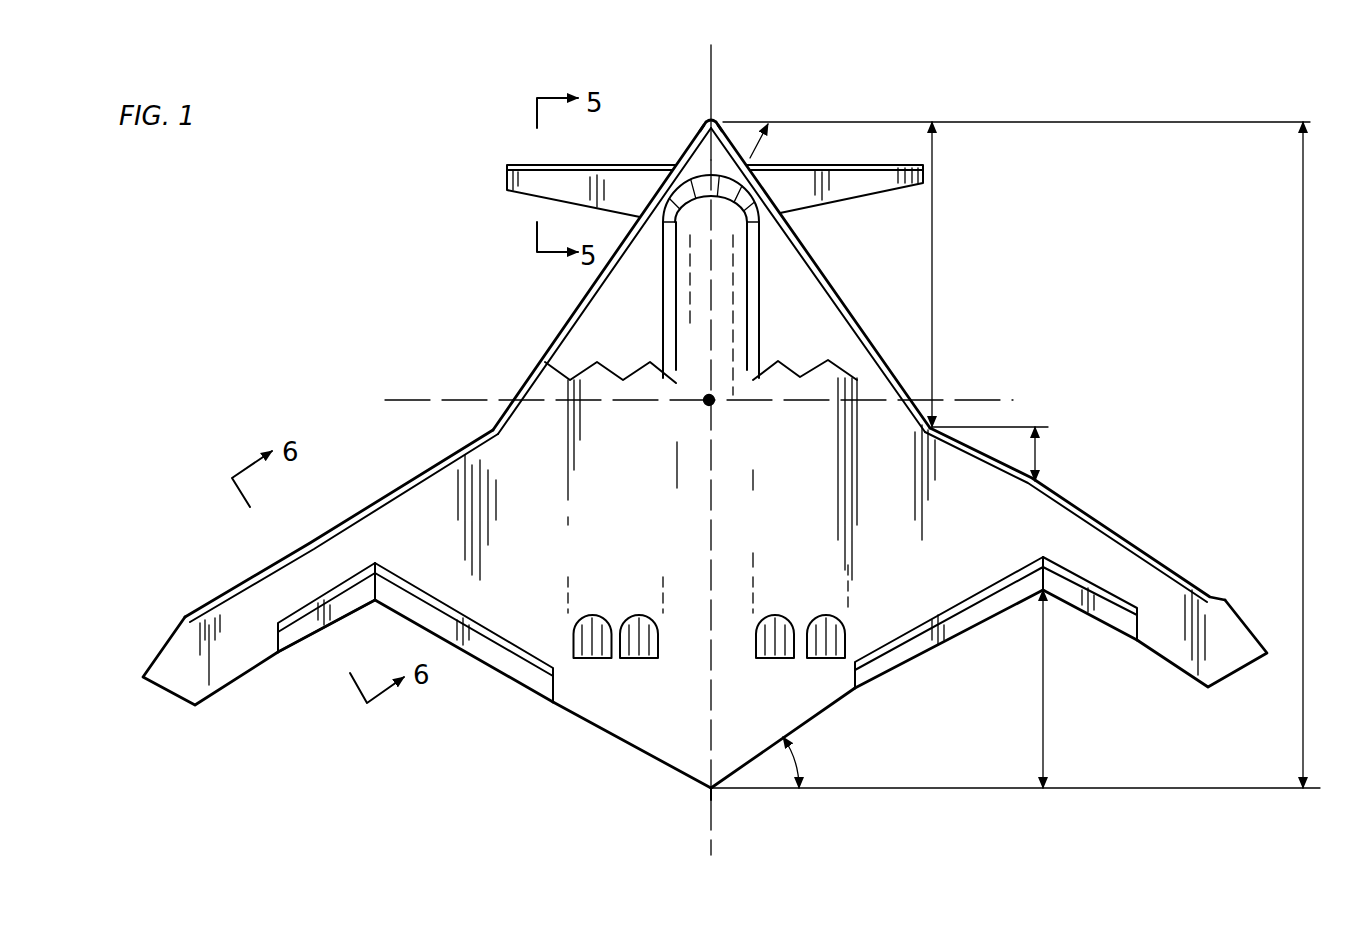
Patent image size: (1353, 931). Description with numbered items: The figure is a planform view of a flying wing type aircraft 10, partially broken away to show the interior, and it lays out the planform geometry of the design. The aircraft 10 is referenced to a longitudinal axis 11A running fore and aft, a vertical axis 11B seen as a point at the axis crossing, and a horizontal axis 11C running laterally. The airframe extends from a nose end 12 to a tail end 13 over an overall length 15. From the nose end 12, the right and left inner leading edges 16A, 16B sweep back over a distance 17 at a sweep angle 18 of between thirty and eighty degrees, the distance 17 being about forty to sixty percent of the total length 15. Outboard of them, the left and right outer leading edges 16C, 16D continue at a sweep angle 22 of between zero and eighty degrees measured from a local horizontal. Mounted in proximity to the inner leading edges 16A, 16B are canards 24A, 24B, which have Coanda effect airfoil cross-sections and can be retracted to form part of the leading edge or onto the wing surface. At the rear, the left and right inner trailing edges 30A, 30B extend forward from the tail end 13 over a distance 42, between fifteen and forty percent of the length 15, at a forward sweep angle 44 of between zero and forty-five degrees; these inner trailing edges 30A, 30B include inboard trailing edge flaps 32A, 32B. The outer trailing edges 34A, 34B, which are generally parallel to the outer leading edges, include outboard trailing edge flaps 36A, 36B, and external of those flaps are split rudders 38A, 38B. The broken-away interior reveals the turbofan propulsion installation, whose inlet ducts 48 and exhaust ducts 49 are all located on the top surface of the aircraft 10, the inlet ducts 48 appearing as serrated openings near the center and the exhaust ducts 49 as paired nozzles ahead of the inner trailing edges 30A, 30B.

The flying wing aircraft 10 is at (412, 265).
The nose end 12 is at (710, 122).
The tail end 13 is at (713, 790).
The longitudinal axis 11A is at (711, 838).
The vertical axis 11B is at (713, 402).
The horizontal axis 11C is at (965, 398).
The overall length 15 is at (1303, 352).
The distance 17 is at (932, 293).
The sweep angle 18 is at (757, 152).
The sweep angle 22 is at (1042, 460).
The canard 24A is at (560, 163).
The canard 24B is at (846, 167).
The inner leading edge 16A is at (587, 297).
The inner leading edge 16B is at (836, 277).
The outer leading edge 16C is at (366, 505).
The outer leading edge 16D is at (1082, 512).
The inlet duct 48 is at (545, 362).
The exhaust duct 49 is at (587, 658).
The inner trailing edge 30A is at (640, 752).
The inner trailing edge 30B is at (797, 728).
The inboard trailing edge flap 32A is at (502, 672).
The inboard trailing edge flap 32B is at (913, 660).
The outer trailing edge 34A is at (333, 625).
The outer trailing edge 34B is at (1132, 645).
The outboard trailing edge flap 36A is at (303, 640).
The outboard trailing edge flap 36B is at (1092, 616).
The split rudder 38A is at (227, 690).
The split rudder 38B is at (1197, 682).
The distance 42 is at (1045, 723).
The forward sweep angle 44 is at (800, 768).